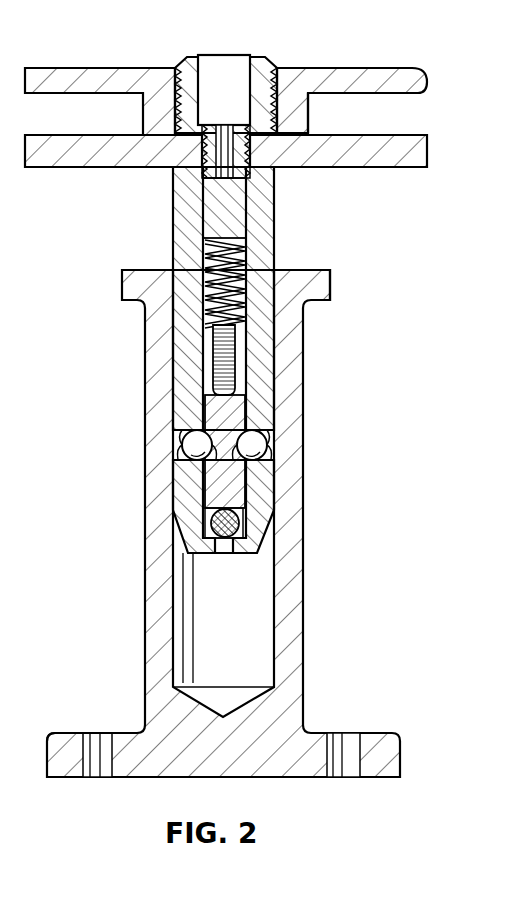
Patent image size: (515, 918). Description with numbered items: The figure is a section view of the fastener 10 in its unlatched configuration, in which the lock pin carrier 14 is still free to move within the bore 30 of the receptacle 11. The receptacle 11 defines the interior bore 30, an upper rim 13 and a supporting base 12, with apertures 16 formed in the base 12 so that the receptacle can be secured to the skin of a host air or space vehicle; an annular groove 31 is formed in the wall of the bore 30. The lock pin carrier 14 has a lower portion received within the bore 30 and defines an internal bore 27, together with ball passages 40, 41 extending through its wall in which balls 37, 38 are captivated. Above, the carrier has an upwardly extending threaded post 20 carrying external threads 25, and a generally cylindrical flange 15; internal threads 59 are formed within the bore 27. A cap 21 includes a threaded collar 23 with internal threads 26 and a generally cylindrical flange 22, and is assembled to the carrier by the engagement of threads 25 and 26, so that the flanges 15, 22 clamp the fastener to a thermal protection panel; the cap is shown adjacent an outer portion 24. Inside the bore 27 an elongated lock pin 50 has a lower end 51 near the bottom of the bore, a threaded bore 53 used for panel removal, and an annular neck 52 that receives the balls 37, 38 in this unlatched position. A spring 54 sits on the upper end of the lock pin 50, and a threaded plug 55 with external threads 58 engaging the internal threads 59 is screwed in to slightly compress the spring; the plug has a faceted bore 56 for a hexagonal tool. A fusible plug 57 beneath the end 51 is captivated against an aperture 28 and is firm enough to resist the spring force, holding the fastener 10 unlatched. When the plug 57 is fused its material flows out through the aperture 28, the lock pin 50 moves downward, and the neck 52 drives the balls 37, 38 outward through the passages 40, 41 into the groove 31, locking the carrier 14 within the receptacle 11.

The fastener 10 is at (33, 447).
The receptacle 11 is at (145, 525).
The supporting base 12 is at (74, 733).
The upper rim 13 is at (328, 287).
The lock pin carrier 14 is at (276, 247).
The cylindrical flange 15 is at (427, 143).
The apertures 16 is at (345, 733).
The threaded post 20 is at (267, 58).
The cap 21 is at (367, 68).
The cylindrical flange 22 is at (25, 78).
The threaded collar 23 is at (308, 110).
The right upper clamp arm 24 is at (420, 108).
The external threads 25 is at (278, 90).
The internal threads 26 is at (182, 58).
The internal bore 27 is at (243, 88).
The aperture 28 is at (226, 556).
The interior bore 30 is at (270, 603).
The annular groove 31 is at (268, 446).
The ball 37 is at (186, 482).
The ball 38 is at (263, 438).
The ball passage 40 is at (180, 460).
The ball passage 41 is at (267, 455).
The lock pin 50 is at (262, 430).
The lower end 51 is at (212, 528).
The annular neck 52 is at (184, 441).
The threaded bore 53 is at (216, 356).
The spring 54 is at (208, 290).
The threaded plug 55 is at (222, 207).
The faceted bore 56 is at (245, 146).
The fusible plug 57 is at (248, 532).
The external threads 58 is at (201, 162).
The internal threads 59 is at (240, 166).